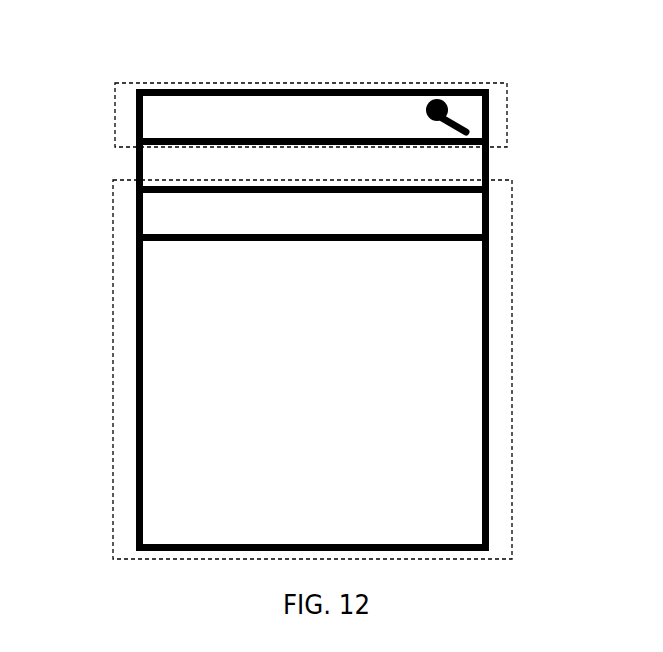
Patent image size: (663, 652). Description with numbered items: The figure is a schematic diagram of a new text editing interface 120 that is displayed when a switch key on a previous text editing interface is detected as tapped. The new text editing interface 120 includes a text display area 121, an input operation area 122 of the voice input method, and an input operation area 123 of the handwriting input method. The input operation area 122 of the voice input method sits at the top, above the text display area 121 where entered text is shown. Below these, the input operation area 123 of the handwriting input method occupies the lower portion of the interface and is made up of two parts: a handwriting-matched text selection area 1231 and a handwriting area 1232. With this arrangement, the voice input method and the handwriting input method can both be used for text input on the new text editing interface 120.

The new text editing interface 120 is at (316, 74).
The input operation area of the voice input method 122 is at (507, 122).
The text display area 121 is at (153, 163).
The handwriting-matched text selection area 1231 is at (152, 218).
The handwriting area 1232 is at (177, 330).
The input operation area of the handwriting input method 123 is at (512, 323).